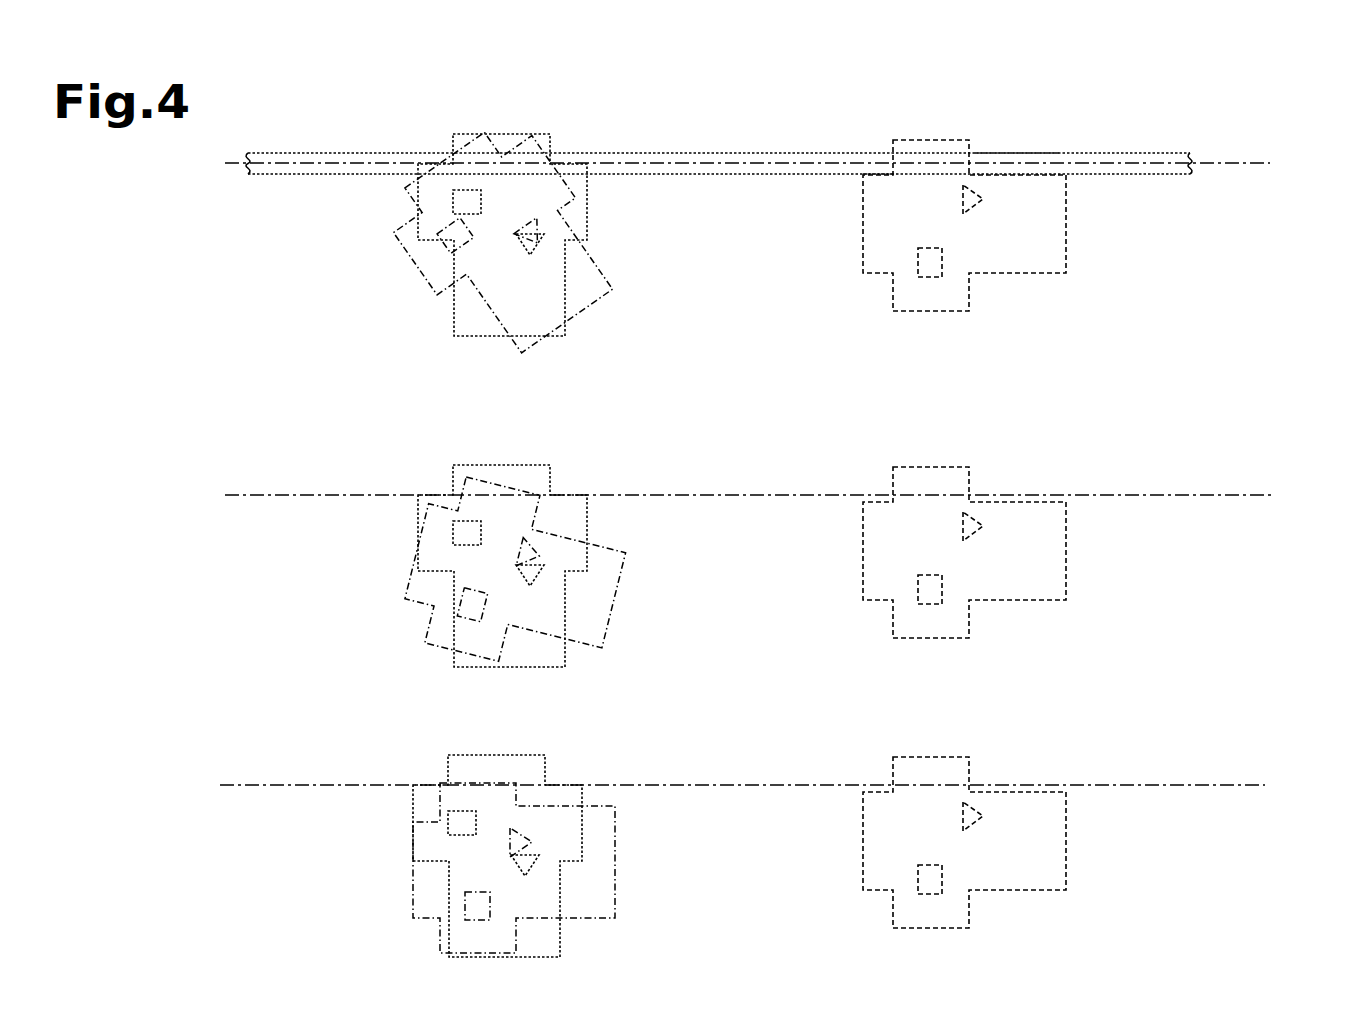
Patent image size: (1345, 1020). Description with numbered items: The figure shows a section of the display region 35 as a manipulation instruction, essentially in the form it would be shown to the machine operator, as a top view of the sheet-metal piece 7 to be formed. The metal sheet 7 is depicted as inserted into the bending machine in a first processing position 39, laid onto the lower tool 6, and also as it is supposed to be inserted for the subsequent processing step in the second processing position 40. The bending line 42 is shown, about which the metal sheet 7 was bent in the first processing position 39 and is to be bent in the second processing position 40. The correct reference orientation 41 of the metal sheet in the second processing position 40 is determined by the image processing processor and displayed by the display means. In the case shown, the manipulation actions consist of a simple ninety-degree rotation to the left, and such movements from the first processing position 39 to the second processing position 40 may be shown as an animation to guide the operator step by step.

The lower tool 6 is at (1163, 162).
The sheet-metal piece 7 is at (577, 168).
The display region 35 is at (1089, 271).
The first processing position 39 is at (505, 112).
The second processing position 40 is at (1014, 157).
The reference orientation 41 is at (878, 168).
The bending line 42 is at (1228, 150).